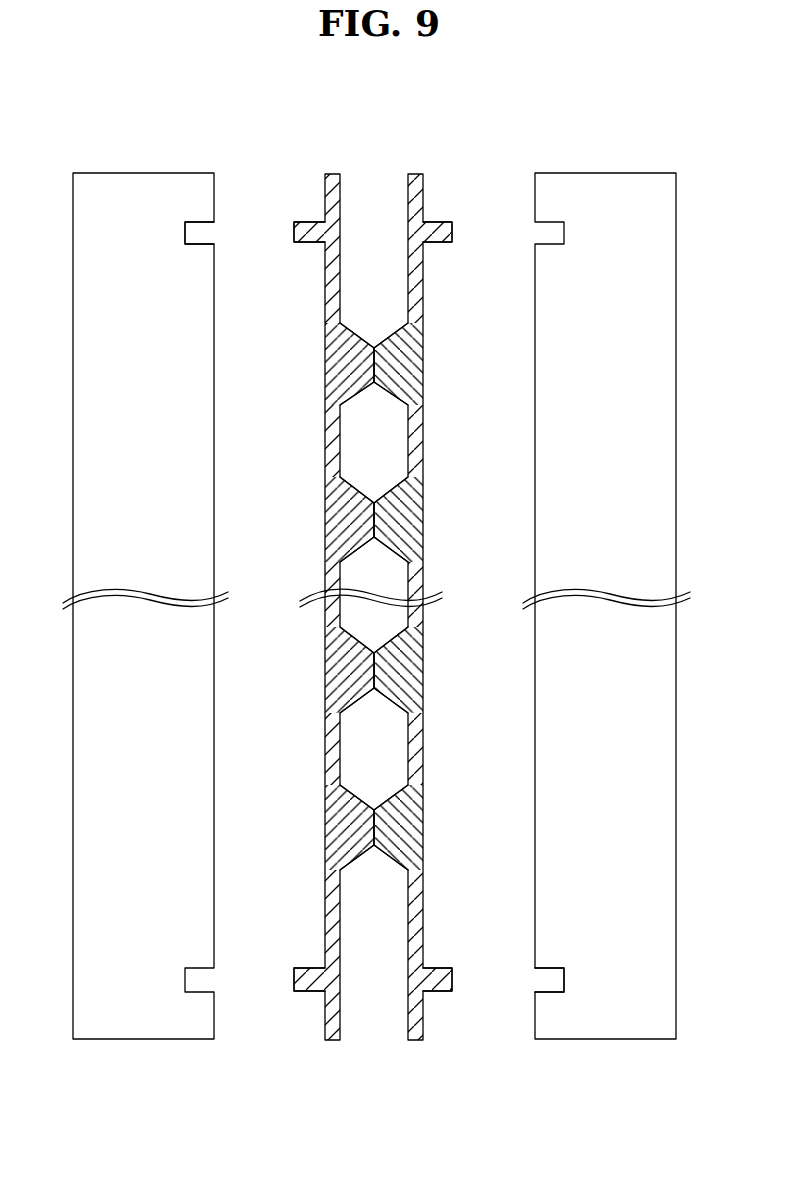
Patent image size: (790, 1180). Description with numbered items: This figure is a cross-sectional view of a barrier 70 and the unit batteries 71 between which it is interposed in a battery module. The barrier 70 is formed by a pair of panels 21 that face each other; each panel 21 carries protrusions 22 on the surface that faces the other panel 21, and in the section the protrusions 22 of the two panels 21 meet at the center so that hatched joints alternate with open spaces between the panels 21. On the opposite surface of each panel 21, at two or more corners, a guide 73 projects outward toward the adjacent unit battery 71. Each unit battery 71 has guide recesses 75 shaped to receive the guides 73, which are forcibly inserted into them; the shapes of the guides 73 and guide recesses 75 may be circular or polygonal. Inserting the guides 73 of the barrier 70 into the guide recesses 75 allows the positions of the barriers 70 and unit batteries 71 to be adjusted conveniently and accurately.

The barrier 70 is at (433, 150).
The unit battery 71 is at (113, 174).
The guide recess 75 is at (205, 226).
The guide 73 is at (308, 222).
The panel 21 is at (325, 302).
The protrusion 22 is at (353, 362).